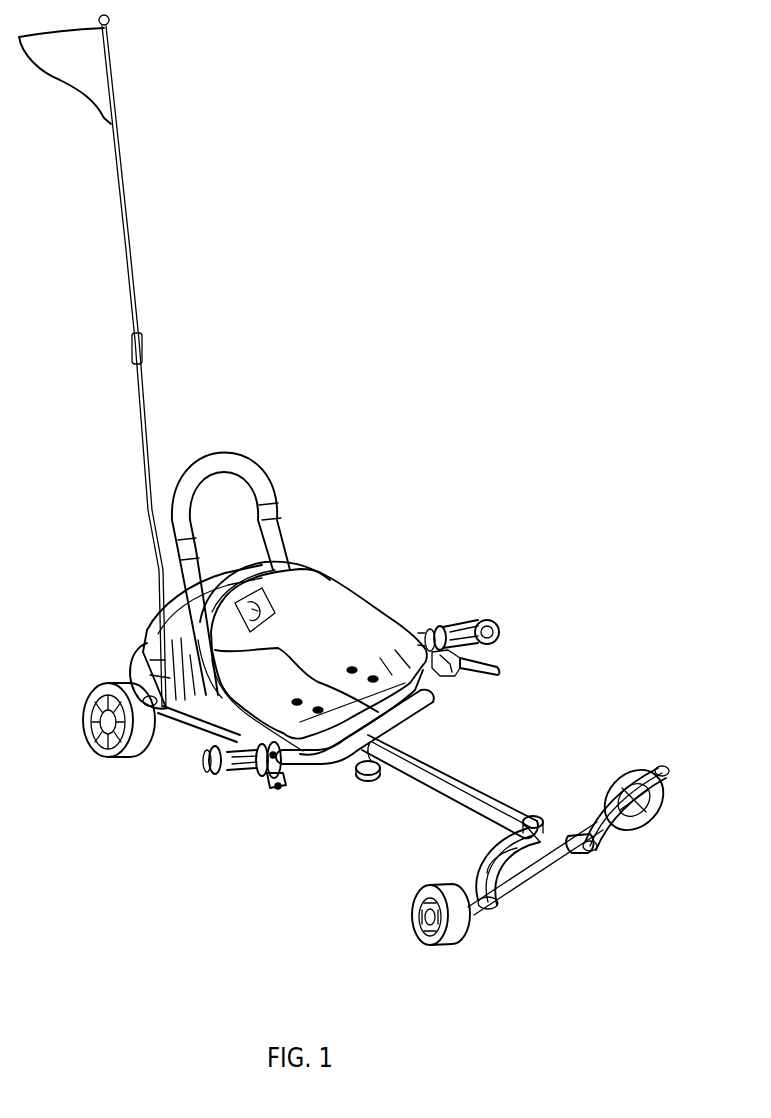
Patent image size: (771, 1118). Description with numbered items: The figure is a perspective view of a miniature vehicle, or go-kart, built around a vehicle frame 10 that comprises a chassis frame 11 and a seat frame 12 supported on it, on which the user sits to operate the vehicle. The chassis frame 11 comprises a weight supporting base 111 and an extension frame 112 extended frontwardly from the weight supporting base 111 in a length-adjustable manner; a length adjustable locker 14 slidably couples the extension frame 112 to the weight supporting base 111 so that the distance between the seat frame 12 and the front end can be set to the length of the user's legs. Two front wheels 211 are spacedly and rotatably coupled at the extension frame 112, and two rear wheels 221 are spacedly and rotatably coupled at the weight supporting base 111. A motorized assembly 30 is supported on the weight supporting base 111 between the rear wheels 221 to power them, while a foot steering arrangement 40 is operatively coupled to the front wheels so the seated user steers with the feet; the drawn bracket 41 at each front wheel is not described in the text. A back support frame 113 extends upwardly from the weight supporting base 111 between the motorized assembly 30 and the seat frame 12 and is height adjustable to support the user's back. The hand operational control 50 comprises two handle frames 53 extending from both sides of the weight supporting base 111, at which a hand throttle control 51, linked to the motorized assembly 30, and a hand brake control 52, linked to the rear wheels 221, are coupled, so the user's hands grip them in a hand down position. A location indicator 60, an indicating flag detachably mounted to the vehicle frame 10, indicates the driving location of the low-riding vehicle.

The vehicle frame 10 is at (414, 443).
The chassis frame 11 is at (568, 712).
The seat frame 12 is at (347, 613).
The length adjustable locker 14 is at (366, 798).
The motorized assembly 30 is at (166, 612).
The foot steering arrangement 40 is at (615, 896).
The wheel fork 41 is at (636, 795).
The hand operational control 50 is at (200, 828).
The hand throttle control 51 is at (266, 800).
The hand brake control 52 is at (512, 656).
The handle frames 53 is at (457, 632).
The location indicator 60 is at (125, 227).
The weight supporting base 111 is at (410, 710).
The extension frame 112 is at (487, 807).
The back support frame 113 is at (253, 478).
The front wheels 211 is at (624, 778).
The rear wheels 221 is at (112, 688).